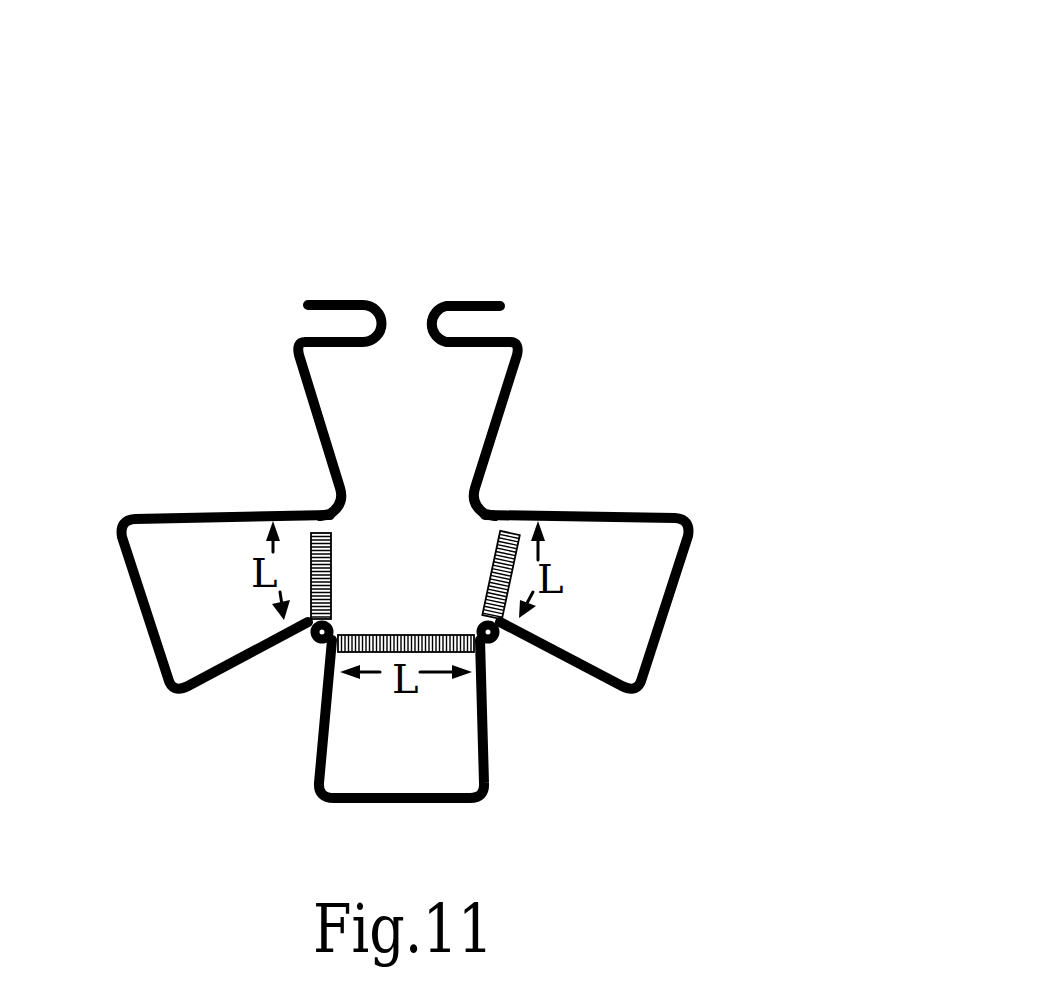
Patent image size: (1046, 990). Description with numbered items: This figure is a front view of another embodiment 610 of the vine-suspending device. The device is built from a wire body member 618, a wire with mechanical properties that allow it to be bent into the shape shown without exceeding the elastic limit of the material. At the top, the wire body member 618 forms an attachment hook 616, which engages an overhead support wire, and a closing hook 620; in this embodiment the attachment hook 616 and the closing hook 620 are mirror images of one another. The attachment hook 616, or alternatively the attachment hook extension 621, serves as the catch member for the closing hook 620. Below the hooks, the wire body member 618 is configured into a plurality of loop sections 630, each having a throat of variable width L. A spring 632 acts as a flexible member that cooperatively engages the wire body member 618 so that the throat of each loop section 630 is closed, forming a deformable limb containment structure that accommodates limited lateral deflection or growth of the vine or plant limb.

The embodiment of the device 610 is at (445, 200).
The attachment hook 616 is at (317, 298).
The closing hook 620 is at (505, 302).
The attachment hook extension 621 is at (300, 393).
The loop section 630 is at (662, 515).
The spring 632 is at (405, 637).
The wire body member 618 is at (735, 643).